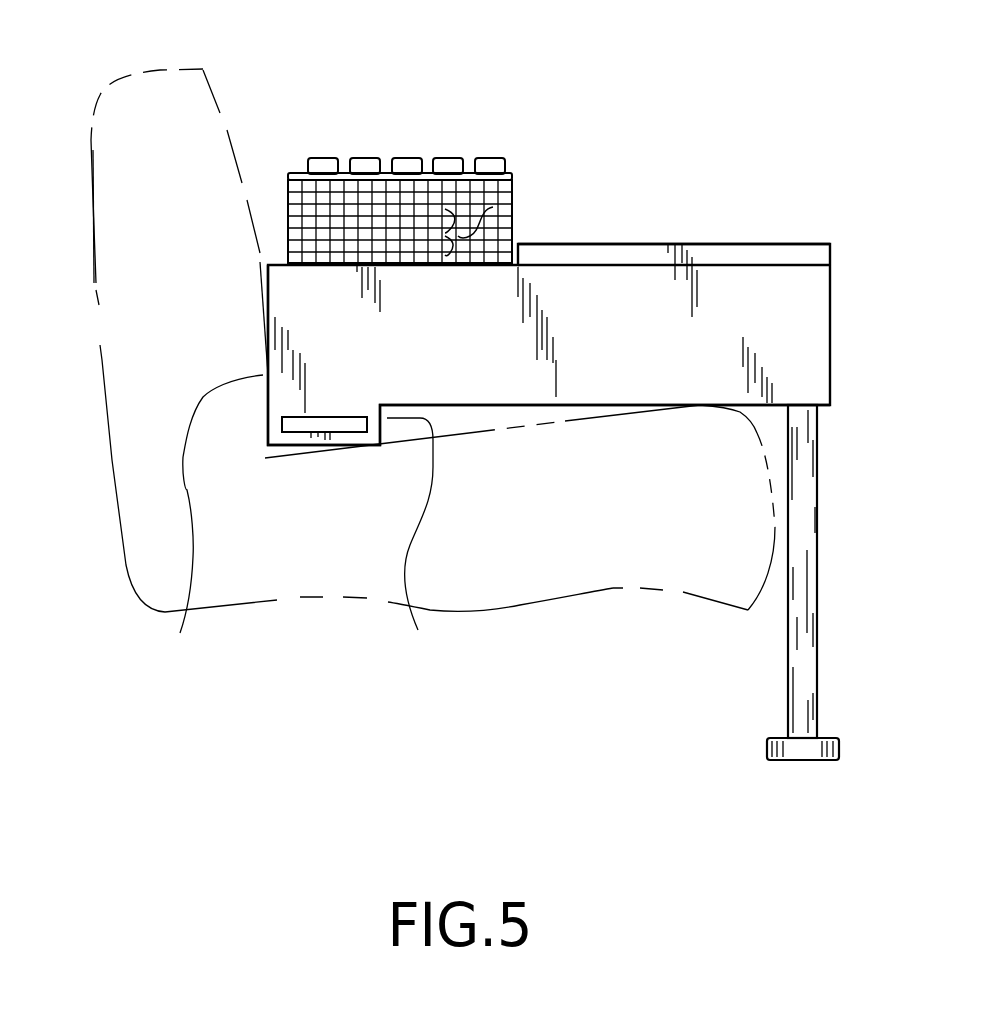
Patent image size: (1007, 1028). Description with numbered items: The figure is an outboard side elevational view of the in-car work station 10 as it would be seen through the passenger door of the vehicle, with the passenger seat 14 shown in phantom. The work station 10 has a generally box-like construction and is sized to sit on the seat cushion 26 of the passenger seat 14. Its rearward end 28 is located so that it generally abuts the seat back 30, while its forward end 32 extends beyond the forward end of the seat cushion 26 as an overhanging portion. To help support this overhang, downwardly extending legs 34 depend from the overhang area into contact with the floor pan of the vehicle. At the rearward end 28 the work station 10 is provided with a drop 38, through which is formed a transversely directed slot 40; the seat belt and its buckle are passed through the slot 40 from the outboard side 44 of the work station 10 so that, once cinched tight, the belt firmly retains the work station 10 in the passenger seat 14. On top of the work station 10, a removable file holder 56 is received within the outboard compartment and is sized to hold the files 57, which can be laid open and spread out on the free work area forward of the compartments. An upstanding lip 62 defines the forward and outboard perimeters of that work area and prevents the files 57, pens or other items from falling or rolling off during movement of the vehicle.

The in-car work station 10 is at (705, 150).
The passenger seat 14 is at (175, 127).
The seat cushion 26 is at (560, 550).
The rearward end 28 is at (211, 521).
The seat back 30 is at (190, 320).
The forward end 32 is at (830, 307).
The downwardly extending legs 34 is at (797, 537).
The drop 38 is at (411, 538).
The slot 40 is at (298, 432).
The outboard side 44 is at (758, 327).
The file holder 56 is at (493, 207).
The files 57 is at (408, 158).
The upstanding lip 62 is at (773, 242).